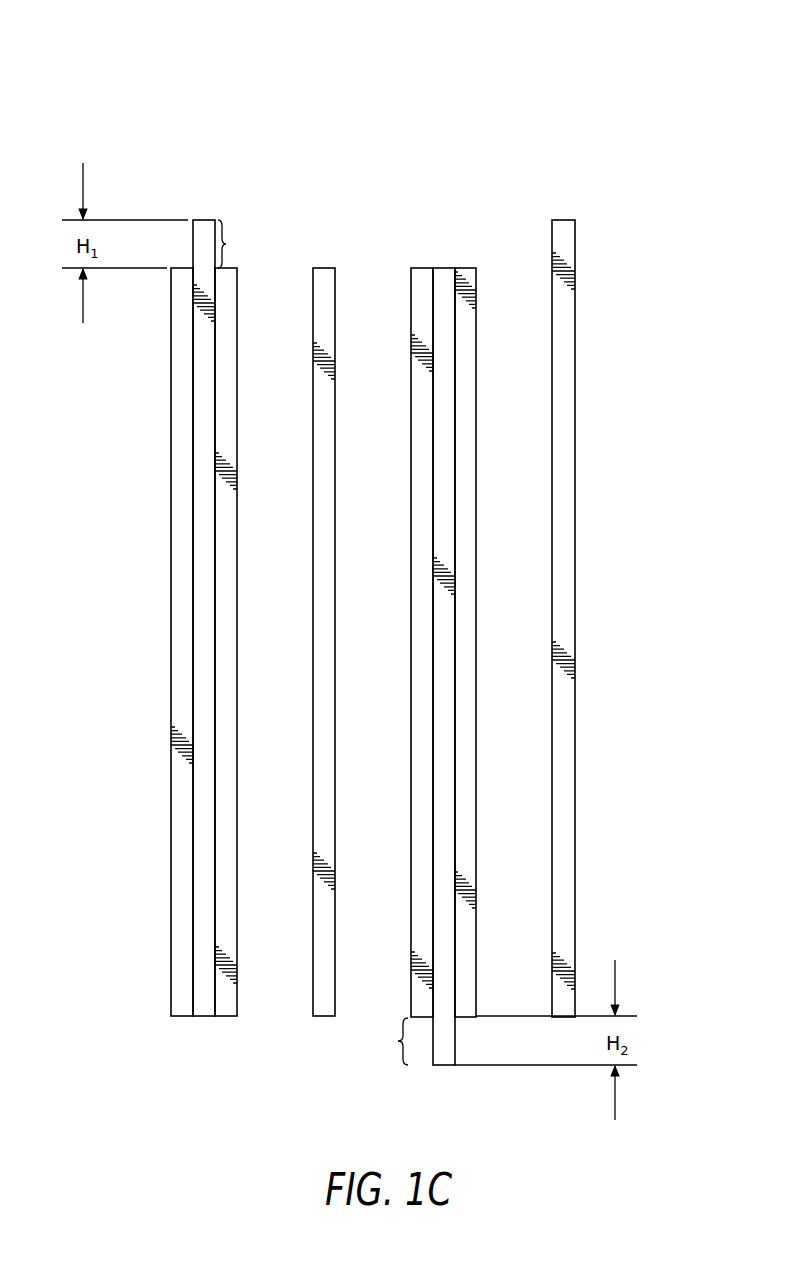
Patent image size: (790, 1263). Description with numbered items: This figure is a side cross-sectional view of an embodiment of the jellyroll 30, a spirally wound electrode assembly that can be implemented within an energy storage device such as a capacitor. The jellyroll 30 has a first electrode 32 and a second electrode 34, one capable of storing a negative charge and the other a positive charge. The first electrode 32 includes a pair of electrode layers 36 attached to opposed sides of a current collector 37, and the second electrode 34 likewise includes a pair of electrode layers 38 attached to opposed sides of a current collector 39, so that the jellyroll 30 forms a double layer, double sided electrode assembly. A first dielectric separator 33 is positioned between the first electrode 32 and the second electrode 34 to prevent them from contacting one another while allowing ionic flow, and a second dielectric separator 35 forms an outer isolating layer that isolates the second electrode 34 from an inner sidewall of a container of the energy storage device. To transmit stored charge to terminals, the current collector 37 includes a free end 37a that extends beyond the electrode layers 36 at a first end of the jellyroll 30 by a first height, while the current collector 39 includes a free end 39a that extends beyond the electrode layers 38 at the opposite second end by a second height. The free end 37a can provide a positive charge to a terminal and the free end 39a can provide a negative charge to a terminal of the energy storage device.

The jellyroll 30 is at (615, 108).
The first electrode 32 is at (207, 212).
The first dielectric separator 33 is at (332, 255).
The second electrode 34 is at (445, 253).
The second dielectric separator 35 is at (575, 210).
The electrode layer 36 is at (183, 348).
The current collector 37 is at (202, 388).
The free end 37a is at (226, 244).
The electrode layer 38 is at (470, 277).
The current collector 39 is at (443, 367).
The free end 39a is at (397, 1041).